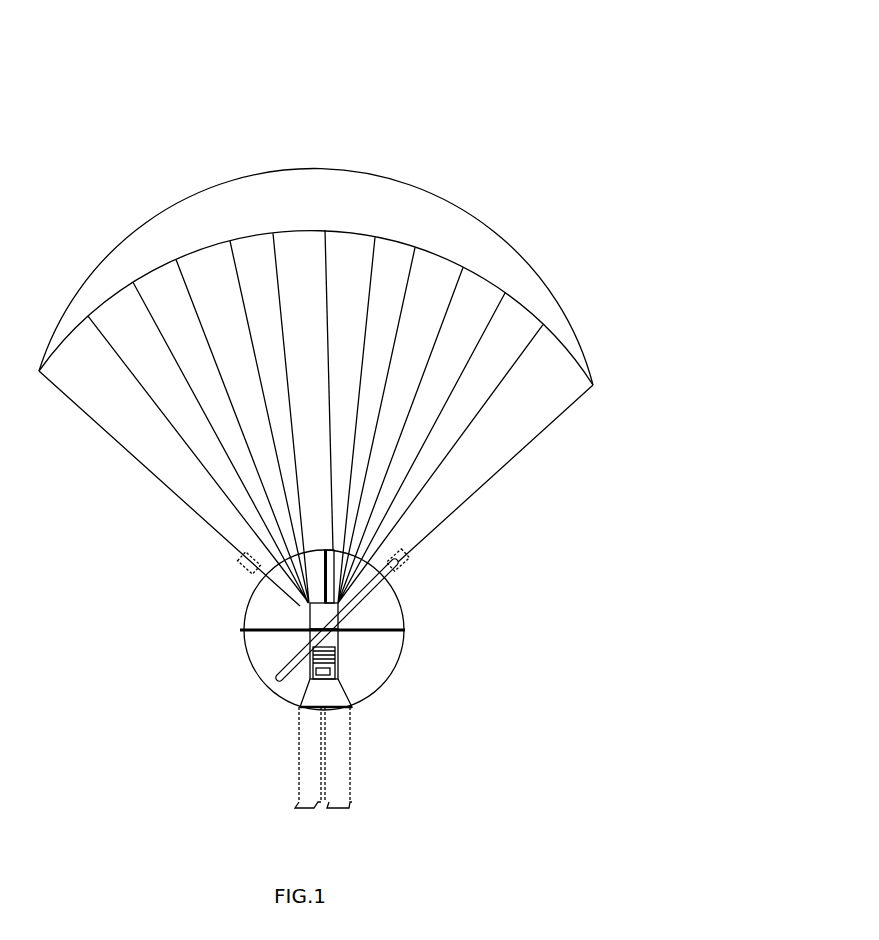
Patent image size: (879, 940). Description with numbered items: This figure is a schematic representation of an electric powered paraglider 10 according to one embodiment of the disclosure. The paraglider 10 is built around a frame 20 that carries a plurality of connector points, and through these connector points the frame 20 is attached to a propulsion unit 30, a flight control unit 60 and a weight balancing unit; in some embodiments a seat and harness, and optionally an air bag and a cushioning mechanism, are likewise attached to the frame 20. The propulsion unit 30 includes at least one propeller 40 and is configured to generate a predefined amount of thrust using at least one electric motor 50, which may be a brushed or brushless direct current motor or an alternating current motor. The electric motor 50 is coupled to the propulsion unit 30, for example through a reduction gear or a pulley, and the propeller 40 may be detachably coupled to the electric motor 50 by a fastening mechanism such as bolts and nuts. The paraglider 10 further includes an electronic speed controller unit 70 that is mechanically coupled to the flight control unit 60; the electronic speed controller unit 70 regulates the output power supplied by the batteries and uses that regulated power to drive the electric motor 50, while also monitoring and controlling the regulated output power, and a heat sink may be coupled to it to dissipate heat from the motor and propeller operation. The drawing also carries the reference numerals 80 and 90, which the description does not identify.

The electric powered paraglider 10 is at (302, 118).
The frame 20 is at (300, 706).
The propulsion unit 30 is at (345, 652).
The propeller 40 is at (284, 664).
The electric motor 50 is at (308, 620).
The flight control unit 60 is at (340, 668).
The electronic speed controller unit 70 is at (300, 656).
The housing 80 is at (390, 678).
The canopy 90 is at (496, 229).